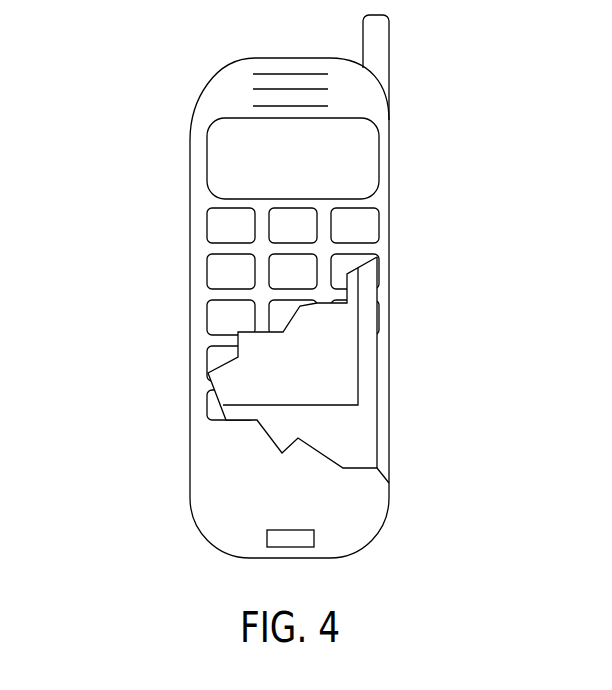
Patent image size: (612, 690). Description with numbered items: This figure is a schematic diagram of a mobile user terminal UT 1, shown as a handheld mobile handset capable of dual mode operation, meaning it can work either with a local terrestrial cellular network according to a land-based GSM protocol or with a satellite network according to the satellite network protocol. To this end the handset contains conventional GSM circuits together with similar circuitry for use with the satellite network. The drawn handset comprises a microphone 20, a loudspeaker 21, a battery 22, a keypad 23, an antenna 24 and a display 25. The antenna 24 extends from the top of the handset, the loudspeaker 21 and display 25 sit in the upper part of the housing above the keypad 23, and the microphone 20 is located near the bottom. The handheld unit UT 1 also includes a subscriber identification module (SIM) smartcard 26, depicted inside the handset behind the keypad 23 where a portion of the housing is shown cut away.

The mobile user terminal 1 is at (257, 308).
The microphone 20 is at (287, 541).
The loudspeaker 21 is at (293, 75).
The battery 22 is at (368, 437).
The keypad 23 is at (367, 229).
The antenna 24 is at (382, 70).
The display 25 is at (368, 156).
The subscriber identification module (SIM) smartcard 26 is at (348, 350).